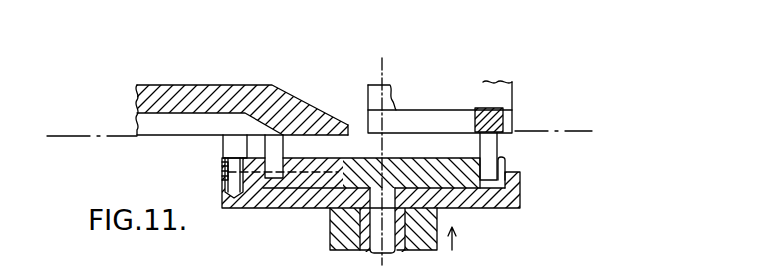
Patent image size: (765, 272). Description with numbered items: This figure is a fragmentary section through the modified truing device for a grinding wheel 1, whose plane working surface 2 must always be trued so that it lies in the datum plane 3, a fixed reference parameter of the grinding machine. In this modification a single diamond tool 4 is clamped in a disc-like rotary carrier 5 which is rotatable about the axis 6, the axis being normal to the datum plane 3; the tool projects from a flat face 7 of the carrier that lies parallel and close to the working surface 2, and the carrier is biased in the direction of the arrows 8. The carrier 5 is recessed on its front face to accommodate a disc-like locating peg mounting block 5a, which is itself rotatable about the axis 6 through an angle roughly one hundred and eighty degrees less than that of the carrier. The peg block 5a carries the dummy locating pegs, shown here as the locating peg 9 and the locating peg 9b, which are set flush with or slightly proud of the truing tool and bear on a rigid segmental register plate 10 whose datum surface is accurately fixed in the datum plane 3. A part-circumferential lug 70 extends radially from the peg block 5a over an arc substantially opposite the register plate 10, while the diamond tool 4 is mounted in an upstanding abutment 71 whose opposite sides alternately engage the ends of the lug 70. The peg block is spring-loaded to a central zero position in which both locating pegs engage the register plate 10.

The grinding wheel 1 is at (140, 100).
The working surface 2 is at (334, 137).
The datum plane 3 is at (329, 122).
The diamond tool 4 is at (228, 147).
The rotary tool carrier 5 is at (266, 207).
The locating peg mounting block 5a is at (505, 167).
The axis 6 is at (384, 68).
The flat face 7 is at (428, 155).
The arrows 8 is at (453, 245).
The locating peg 9 is at (278, 145).
The locating peg 9b is at (495, 145).
The register plate 10 is at (508, 118).
The part-circumferential lug 70 is at (302, 188).
The upstanding abutment 71 is at (222, 167).